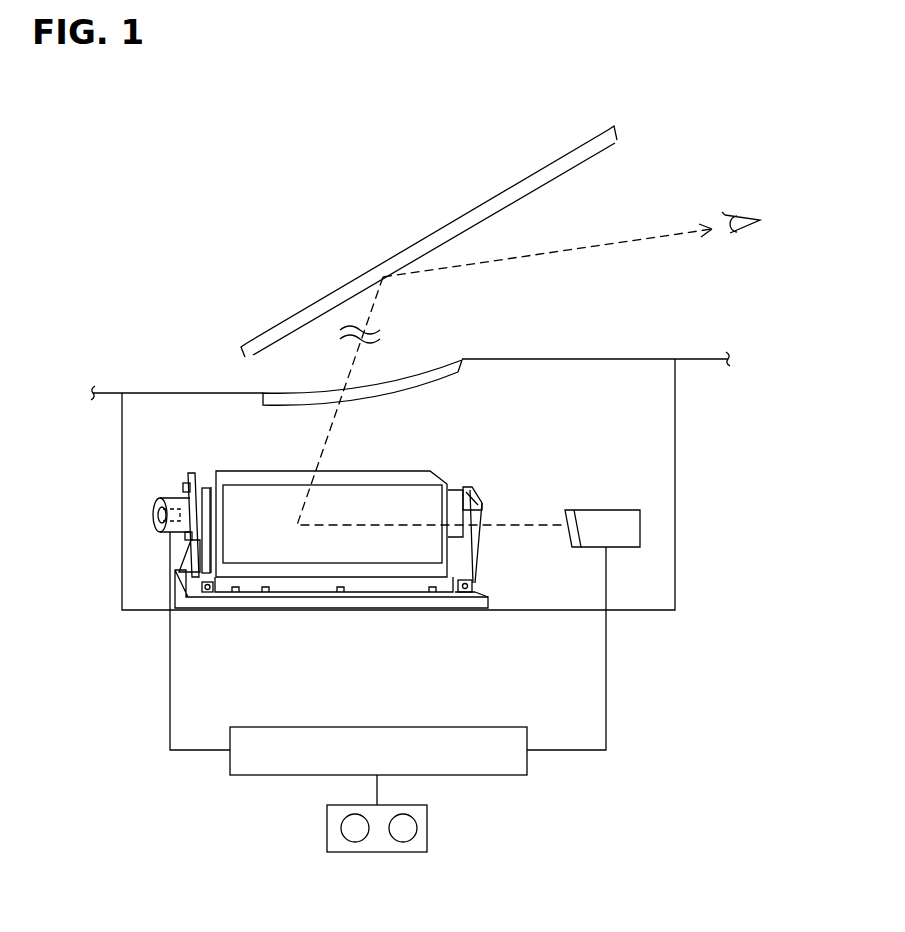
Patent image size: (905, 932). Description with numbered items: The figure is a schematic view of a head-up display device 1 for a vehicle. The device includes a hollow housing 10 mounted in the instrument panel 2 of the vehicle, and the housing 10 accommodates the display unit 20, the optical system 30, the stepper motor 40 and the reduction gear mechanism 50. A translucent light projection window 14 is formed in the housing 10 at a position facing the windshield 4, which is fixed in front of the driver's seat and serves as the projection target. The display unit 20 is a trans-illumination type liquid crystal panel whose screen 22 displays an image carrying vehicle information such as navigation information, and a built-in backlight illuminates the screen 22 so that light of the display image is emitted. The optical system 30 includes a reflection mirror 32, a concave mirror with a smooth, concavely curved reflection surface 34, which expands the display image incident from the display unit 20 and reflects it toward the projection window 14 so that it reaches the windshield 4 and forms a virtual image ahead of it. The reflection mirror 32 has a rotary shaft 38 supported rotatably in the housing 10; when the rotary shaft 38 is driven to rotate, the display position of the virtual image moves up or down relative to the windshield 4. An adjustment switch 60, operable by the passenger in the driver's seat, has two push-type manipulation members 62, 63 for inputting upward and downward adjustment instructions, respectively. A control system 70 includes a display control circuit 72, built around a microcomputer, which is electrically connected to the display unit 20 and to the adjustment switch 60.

The head-up display device 1 is at (708, 616).
The instrument panel 2 is at (703, 358).
The windshield 4 is at (543, 168).
The housing 10 is at (676, 414).
The light projection window 14 is at (446, 366).
The display unit 20 is at (640, 525).
The screen 22 is at (564, 510).
The optical system 30 is at (202, 446).
The reflection mirror 32 is at (358, 553).
The reflection surface 34 is at (246, 552).
The rotary shaft 38 is at (478, 508).
The stepper motor 40 is at (172, 496).
The reduction gear mechanism 50 is at (168, 533).
The adjustment switch 60 is at (441, 833).
The manipulation member 62 is at (355, 843).
The manipulation member 63 is at (403, 843).
The control system 70 is at (311, 707).
The display control circuit 72 is at (447, 727).